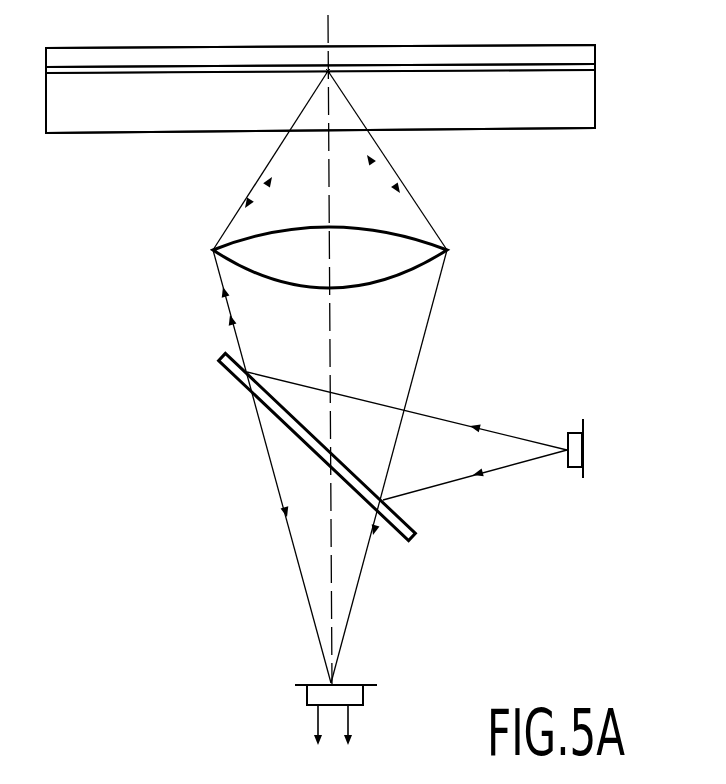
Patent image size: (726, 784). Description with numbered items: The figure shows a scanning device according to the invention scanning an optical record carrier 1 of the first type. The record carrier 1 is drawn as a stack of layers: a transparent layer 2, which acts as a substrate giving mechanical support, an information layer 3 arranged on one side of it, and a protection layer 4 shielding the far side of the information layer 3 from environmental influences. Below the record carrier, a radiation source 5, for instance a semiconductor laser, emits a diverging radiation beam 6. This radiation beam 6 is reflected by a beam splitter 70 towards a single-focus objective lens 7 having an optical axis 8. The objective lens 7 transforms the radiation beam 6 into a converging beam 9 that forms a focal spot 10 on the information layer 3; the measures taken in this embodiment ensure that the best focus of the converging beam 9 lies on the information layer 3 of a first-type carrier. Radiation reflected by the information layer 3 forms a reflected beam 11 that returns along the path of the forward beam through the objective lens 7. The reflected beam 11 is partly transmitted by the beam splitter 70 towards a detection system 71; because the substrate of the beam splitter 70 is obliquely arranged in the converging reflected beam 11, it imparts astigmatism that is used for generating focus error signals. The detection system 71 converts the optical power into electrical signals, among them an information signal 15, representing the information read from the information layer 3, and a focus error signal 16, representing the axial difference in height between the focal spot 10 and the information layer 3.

The optical record carrier 1 is at (349, 68).
The transparent layer 2 is at (588, 95).
The information layer 3 is at (597, 68).
The protection layer 4 is at (585, 51).
The radiation source 5 is at (572, 470).
The radiation beam 6 is at (487, 428).
The objective lens 7 is at (237, 257).
The optical axis 8 is at (323, 28).
The converging beam 9 is at (276, 168).
The focal spot 10 is at (329, 70).
The reflected beam 11 is at (245, 212).
The information signal 15 is at (320, 718).
The focus error signal 16 is at (346, 718).
The beam splitter 70 is at (227, 366).
The detection system 71 is at (305, 685).